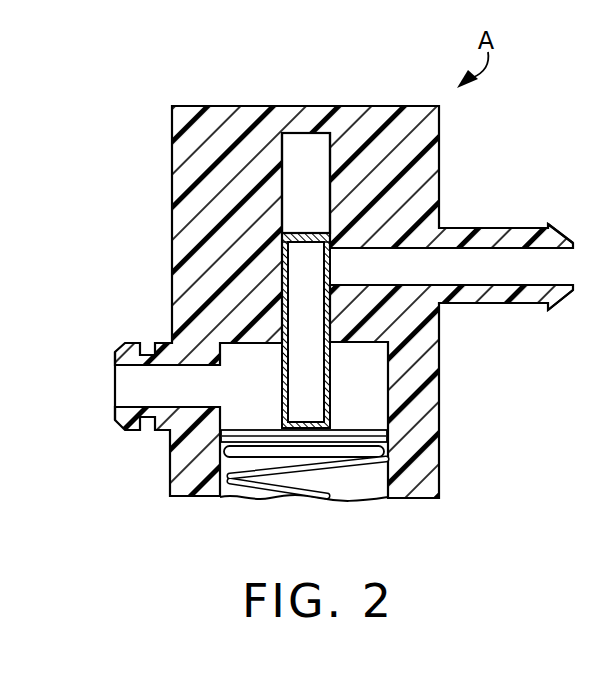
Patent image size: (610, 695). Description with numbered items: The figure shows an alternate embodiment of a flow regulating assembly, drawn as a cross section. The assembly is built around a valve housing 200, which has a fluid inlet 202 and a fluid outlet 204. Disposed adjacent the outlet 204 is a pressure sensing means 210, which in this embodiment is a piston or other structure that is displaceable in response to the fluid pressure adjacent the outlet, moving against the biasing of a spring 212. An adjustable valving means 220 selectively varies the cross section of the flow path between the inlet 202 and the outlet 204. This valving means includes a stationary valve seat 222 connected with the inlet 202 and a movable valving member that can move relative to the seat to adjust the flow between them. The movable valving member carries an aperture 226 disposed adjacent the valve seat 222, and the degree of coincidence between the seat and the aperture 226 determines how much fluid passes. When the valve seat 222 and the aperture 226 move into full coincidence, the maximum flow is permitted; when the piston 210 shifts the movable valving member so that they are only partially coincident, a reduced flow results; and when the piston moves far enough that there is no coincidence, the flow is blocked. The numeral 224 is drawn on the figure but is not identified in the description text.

The valve housing 200 is at (427, 160).
The fluid inlet 202 is at (495, 228).
The fluid outlet 204 is at (123, 344).
The pressure sensing means 210 is at (373, 439).
The spring 212 is at (273, 485).
The adjustable valving means 220 is at (305, 142).
The stationary valve seat 222 is at (337, 240).
The passage 224 is at (281, 264).
The aperture 226 is at (328, 284).